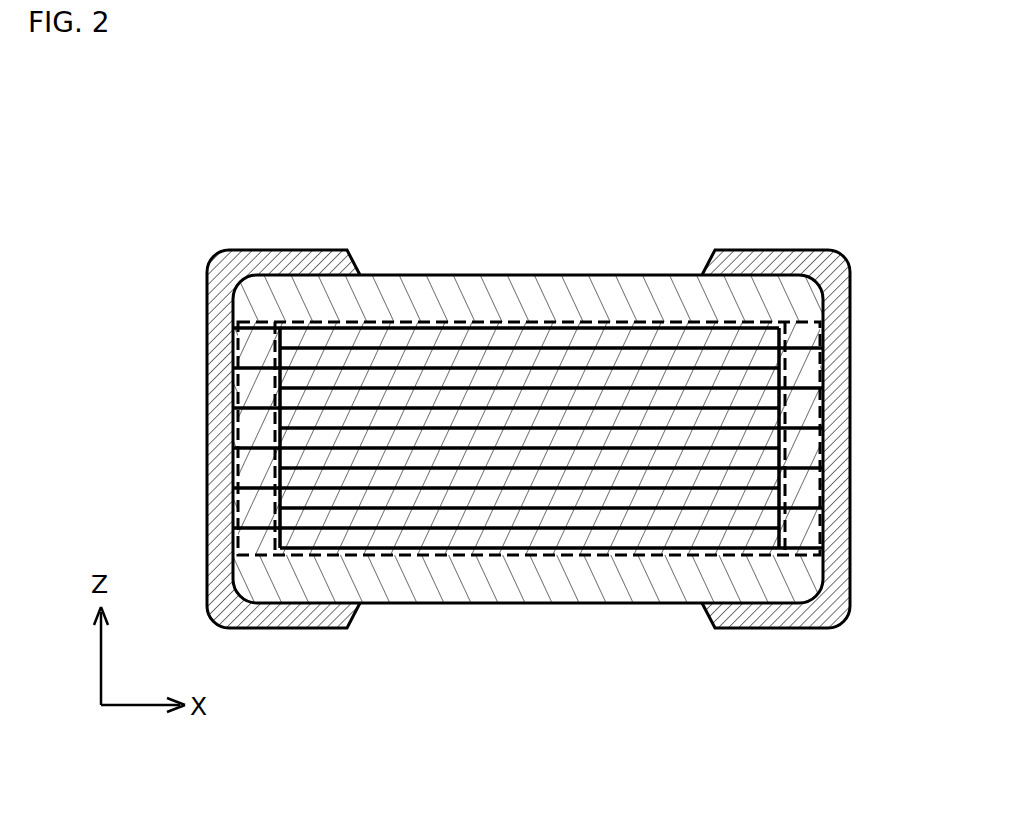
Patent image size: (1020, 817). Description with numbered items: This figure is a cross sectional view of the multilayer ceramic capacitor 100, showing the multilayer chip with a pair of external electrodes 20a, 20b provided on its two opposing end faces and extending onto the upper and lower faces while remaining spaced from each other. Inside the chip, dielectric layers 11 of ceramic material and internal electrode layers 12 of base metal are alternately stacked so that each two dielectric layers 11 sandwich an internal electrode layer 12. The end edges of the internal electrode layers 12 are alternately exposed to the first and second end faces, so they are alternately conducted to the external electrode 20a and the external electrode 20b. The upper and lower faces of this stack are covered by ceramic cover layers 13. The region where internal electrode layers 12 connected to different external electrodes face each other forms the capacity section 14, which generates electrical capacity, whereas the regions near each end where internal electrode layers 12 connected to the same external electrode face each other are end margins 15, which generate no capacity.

The multilayer ceramic capacitor 100 is at (525, 385).
The external electrode 20a is at (235, 248).
The external electrode 20b is at (813, 250).
The end margin 15 is at (258, 322).
The capacity section 14 is at (528, 431).
The cover layer 13 is at (427, 290).
The internal electrode layer 12 is at (473, 490).
The dielectric layer 11 is at (657, 518).